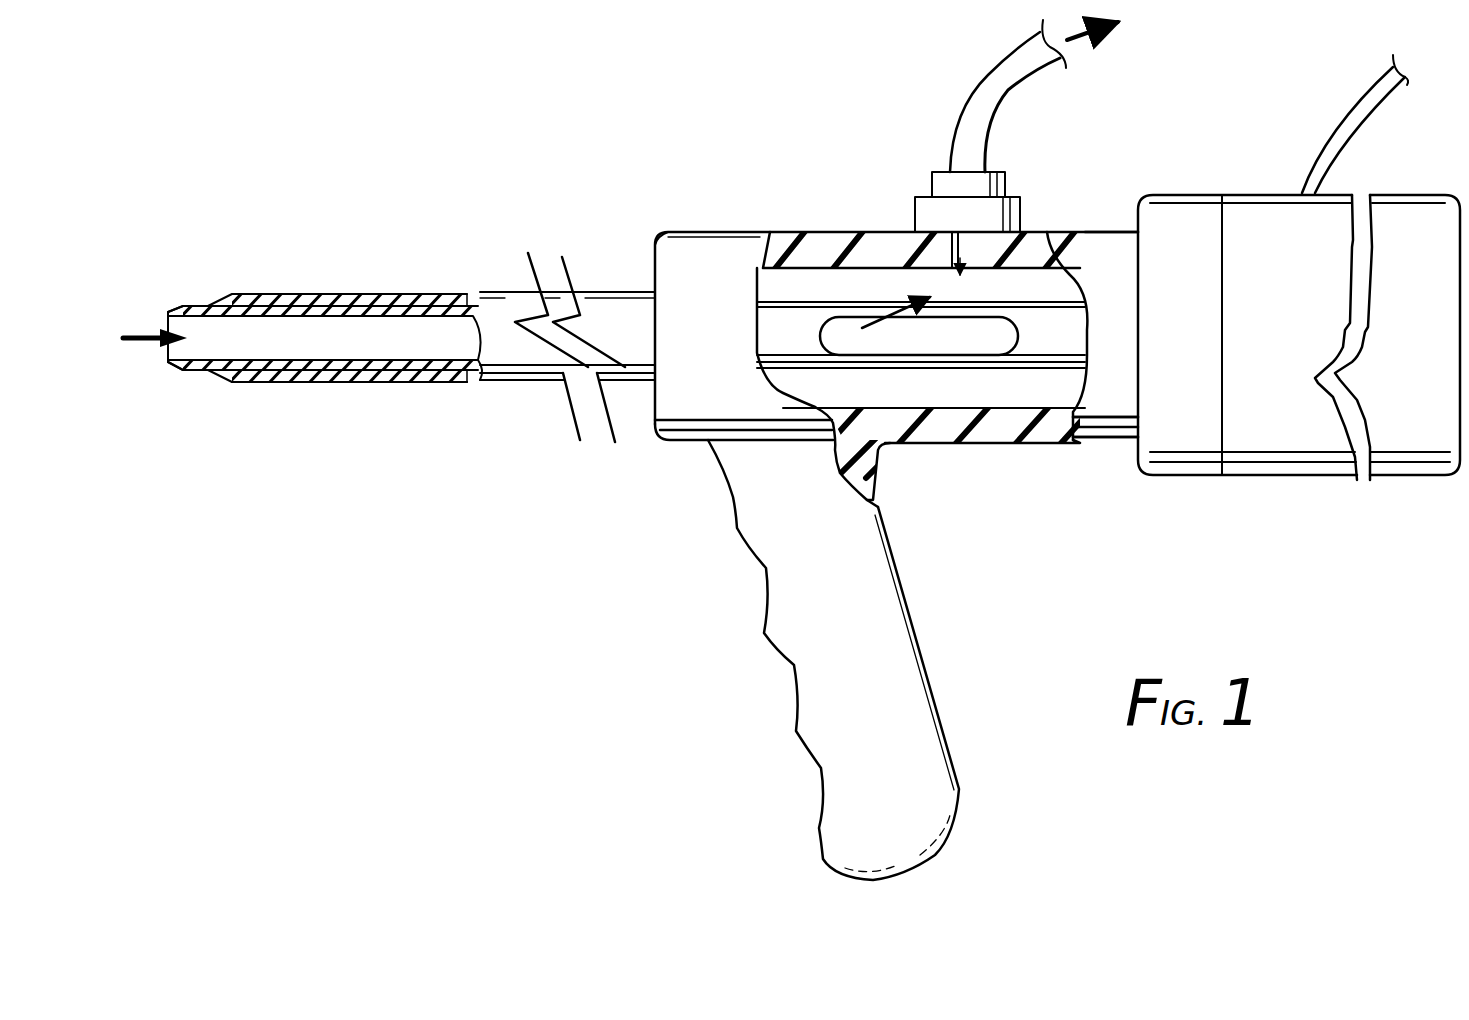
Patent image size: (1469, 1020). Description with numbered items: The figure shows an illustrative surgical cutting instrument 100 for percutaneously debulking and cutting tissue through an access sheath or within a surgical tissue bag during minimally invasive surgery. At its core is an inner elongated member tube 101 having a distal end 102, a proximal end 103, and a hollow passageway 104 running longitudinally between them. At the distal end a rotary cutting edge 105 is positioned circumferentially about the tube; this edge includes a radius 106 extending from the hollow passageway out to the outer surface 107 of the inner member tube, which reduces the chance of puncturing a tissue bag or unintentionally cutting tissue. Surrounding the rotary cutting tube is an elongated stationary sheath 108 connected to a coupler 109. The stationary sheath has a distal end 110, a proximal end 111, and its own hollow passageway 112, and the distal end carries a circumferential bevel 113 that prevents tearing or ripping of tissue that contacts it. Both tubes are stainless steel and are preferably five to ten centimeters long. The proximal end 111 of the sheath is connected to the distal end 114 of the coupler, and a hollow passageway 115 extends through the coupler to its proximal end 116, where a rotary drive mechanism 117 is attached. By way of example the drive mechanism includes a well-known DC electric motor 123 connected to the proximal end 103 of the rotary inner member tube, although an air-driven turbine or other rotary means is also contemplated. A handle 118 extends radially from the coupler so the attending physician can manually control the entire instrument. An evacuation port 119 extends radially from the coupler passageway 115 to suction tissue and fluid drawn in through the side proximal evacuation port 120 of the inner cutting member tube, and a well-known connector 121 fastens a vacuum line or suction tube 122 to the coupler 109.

The surgical cutting instrument 100 is at (715, 213).
The inner elongated member tube 101 is at (807, 300).
The distal end 102 is at (160, 318).
The proximal end 103 is at (1072, 275).
The hollow passageway 104 is at (413, 337).
The rotary cutting edge 105 is at (168, 353).
The radius 106 is at (183, 307).
The outer surface 107 is at (207, 307).
The elongated stationary sheath 108 is at (485, 310).
The coupler 109 is at (750, 233).
The distal end 110 is at (252, 273).
The proximal end 111 is at (613, 277).
The hollow passageway 112 is at (290, 294).
The bevel 113 is at (223, 383).
The distal end 114 is at (655, 232).
The hollow passageway 115 is at (827, 280).
The proximal end 116 is at (1117, 455).
The rotary drive mechanism 117 is at (1192, 478).
The handle 118 is at (957, 752).
The evacuation port 119 is at (973, 233).
The side proximal evacuation port 120 is at (920, 345).
The connector 121 is at (940, 170).
The vacuum line or suction tube 122 is at (1007, 90).
The DC electric motor 123 is at (1270, 478).